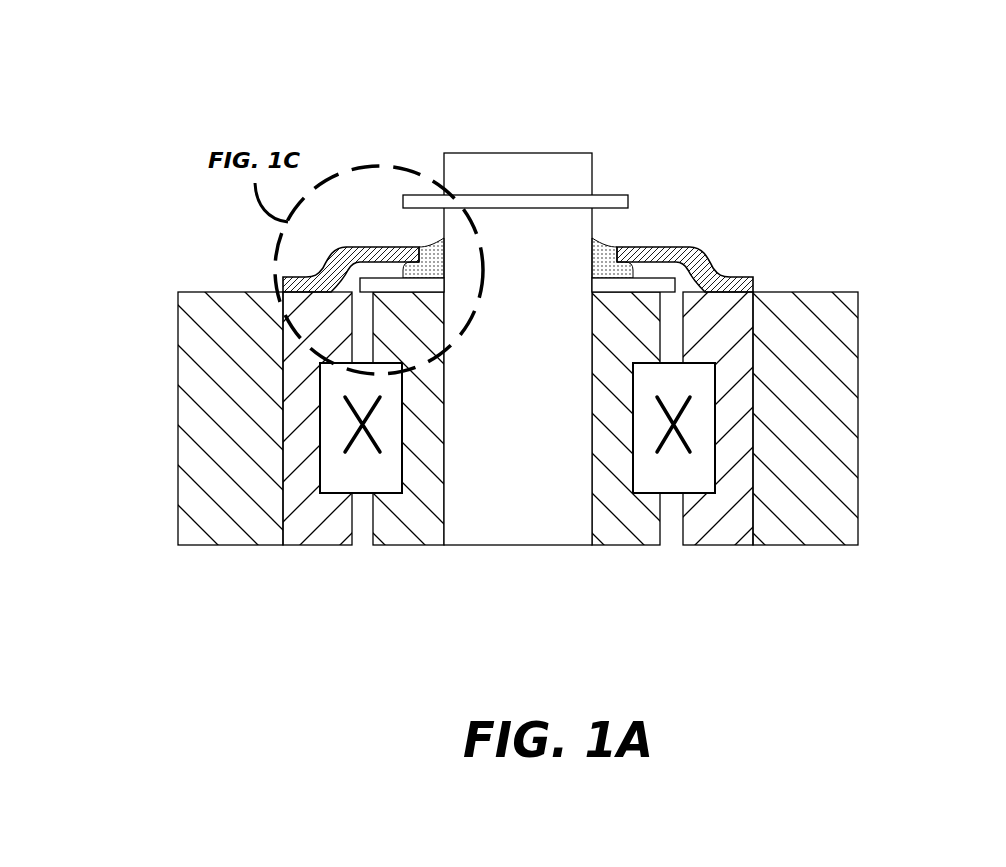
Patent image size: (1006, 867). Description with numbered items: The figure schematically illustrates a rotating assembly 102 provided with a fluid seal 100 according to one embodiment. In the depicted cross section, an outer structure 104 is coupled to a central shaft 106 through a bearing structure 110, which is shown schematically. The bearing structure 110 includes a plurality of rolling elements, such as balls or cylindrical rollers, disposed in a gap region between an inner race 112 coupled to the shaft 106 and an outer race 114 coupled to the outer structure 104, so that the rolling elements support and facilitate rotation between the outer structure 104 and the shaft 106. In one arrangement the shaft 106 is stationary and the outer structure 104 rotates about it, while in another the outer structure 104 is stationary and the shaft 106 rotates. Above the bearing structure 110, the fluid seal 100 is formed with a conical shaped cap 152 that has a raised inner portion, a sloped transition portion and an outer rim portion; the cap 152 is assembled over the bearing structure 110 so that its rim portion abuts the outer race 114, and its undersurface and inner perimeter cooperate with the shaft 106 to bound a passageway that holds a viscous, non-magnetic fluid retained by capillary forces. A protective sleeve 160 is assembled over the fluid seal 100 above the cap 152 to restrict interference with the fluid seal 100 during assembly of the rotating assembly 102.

The fluid seal 100 is at (544, 175).
The rotating assembly 102 is at (591, 386).
The outer structure 104 is at (797, 367).
The shaft 106 is at (538, 391).
The bearing structure 110 is at (700, 375).
The inner race 112 is at (647, 515).
The outer race 114 is at (745, 515).
The conical shaped cap 152 is at (699, 245).
The protective sleeve 160 is at (612, 200).